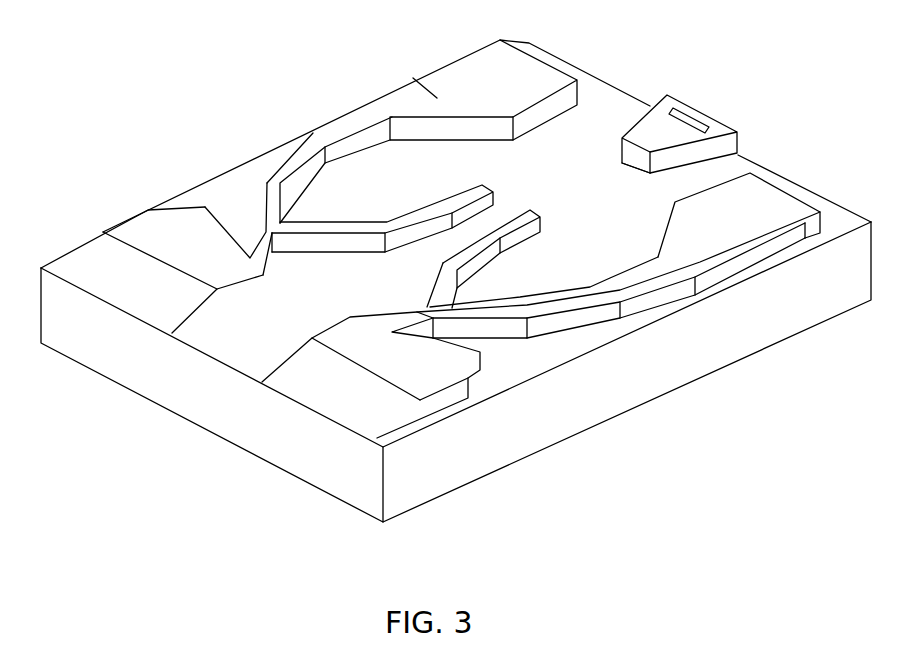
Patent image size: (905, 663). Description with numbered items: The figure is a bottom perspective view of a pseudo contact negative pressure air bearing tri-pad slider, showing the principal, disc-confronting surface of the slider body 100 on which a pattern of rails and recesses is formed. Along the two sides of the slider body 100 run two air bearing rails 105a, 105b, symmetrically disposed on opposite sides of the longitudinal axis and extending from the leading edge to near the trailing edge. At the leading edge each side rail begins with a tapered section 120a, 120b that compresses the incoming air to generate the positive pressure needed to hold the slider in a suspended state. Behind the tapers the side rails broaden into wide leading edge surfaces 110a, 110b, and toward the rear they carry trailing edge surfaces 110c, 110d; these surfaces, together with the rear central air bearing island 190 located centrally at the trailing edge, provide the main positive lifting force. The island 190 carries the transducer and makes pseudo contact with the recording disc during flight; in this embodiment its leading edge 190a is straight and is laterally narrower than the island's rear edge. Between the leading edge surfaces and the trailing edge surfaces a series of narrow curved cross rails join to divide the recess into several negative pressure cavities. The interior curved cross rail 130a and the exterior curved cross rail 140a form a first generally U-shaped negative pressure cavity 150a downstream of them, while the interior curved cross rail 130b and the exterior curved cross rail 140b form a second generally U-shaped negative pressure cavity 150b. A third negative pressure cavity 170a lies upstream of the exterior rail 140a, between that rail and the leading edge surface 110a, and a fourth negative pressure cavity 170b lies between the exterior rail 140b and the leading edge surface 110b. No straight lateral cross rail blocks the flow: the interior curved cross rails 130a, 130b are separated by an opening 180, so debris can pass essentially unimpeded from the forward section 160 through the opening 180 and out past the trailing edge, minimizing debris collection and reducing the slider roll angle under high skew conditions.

The pseudo contact air bearing slider body 100 is at (456, 281).
The air bearing rail 105a is at (336, 127).
The air bearing rail 105b is at (666, 280).
The leading edge surface 110a is at (176, 214).
The leading edge surface 110b is at (479, 388).
The trailing edge surface 110c is at (483, 77).
The trailing edge surface 110d is at (747, 234).
The tapered section 120a is at (122, 254).
The tapered section 120b is at (410, 395).
The interior curved cross rail 130a is at (378, 237).
The interior curved cross rail 130b is at (500, 270).
The exterior curved cross rail 140a is at (298, 120).
The exterior curved cross rail 140b is at (618, 286).
The first negative pressure cavity 150a is at (413, 172).
The second negative pressure cavity 150b is at (545, 268).
The forward section 160 is at (333, 338).
The third negative pressure cavity 170a is at (227, 194).
The fourth negative pressure cavity 170b is at (557, 366).
The opening 180 is at (519, 239).
The rear central air bearing island 190 is at (679, 110).
The straight leading edge 190a is at (593, 153).